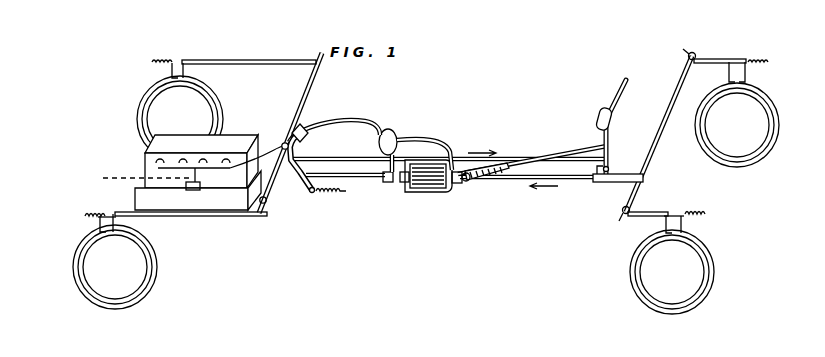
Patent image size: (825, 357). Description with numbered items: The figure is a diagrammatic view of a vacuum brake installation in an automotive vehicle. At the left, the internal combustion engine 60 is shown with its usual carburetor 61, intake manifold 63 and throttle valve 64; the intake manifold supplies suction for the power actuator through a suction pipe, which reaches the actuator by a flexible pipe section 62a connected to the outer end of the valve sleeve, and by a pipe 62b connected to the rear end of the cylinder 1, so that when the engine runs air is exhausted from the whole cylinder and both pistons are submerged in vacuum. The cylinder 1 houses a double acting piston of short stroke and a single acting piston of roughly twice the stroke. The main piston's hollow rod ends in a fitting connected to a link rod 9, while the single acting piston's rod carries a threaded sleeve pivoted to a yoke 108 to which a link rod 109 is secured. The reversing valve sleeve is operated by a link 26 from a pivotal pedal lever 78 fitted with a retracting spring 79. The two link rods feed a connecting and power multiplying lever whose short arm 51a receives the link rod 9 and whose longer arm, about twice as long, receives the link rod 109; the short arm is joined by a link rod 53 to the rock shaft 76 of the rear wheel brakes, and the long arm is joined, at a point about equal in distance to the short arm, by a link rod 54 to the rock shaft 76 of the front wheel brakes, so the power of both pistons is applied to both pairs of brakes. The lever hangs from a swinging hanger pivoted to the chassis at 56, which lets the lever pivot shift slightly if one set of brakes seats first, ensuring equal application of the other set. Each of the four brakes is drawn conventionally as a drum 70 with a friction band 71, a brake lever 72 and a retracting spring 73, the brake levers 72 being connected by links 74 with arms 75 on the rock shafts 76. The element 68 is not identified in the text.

The cylinder 1 is at (428, 186).
The link rod 9 is at (564, 182).
The link 26 is at (371, 180).
The short arm 51a is at (603, 182).
The link rod 53 is at (612, 175).
The link rod 54 is at (352, 147).
The pivot 56 is at (799, 347).
The internal combustion engine 60 is at (238, 140).
The carburetor 61 is at (186, 187).
The flexible pipe section 62a is at (391, 128).
The pipe 62b is at (424, 144).
The intake manifold 63 is at (156, 164).
The throttle valve 64 is at (139, 179).
The conduit 68 is at (340, 121).
The drum 70 is at (142, 266).
The friction band 71 is at (148, 242).
The brake lever 72 is at (98, 220).
The retracting spring 73 is at (155, 60).
The link 74 is at (215, 217).
The arm 75 is at (264, 218).
The rock shaft 76 is at (312, 90).
The pedal lever 78 is at (298, 180).
The retracting spring 79 is at (333, 193).
The yoke 108 is at (492, 181).
The link rod 109 is at (533, 163).